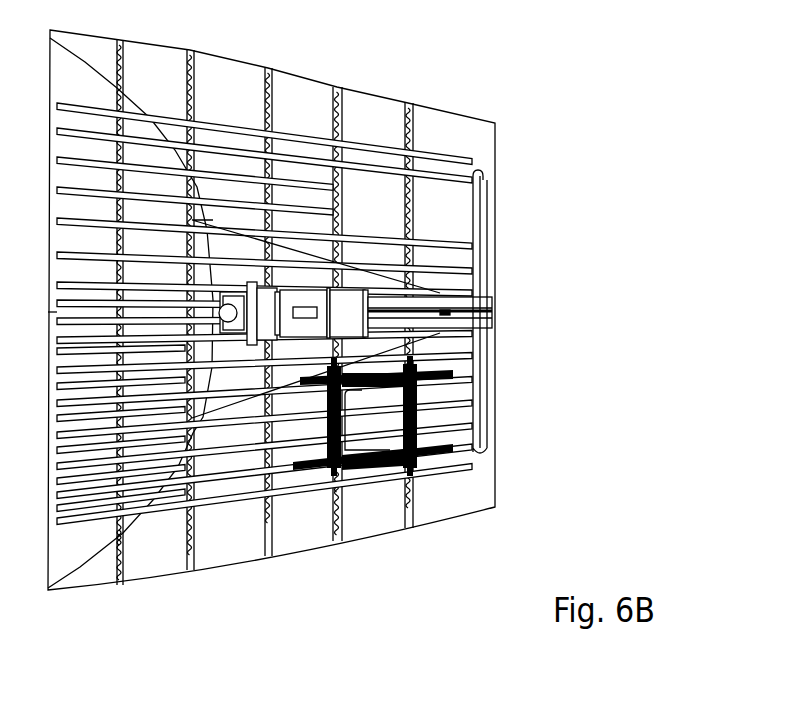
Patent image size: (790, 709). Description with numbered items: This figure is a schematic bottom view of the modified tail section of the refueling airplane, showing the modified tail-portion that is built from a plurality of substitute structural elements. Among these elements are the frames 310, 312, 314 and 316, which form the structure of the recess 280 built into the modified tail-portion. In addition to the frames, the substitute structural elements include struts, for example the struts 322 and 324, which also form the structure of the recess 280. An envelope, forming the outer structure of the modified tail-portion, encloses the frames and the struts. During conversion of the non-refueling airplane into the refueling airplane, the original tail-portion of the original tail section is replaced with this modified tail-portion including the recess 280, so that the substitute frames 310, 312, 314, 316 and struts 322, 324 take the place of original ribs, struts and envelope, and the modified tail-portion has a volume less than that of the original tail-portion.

The frame 310 is at (192, 50).
The frame 312 is at (270, 70).
The frame 314 is at (341, 88).
The frame 316 is at (413, 107).
The recess 280 is at (307, 257).
The strut 322 is at (465, 250).
The strut 324 is at (470, 272).